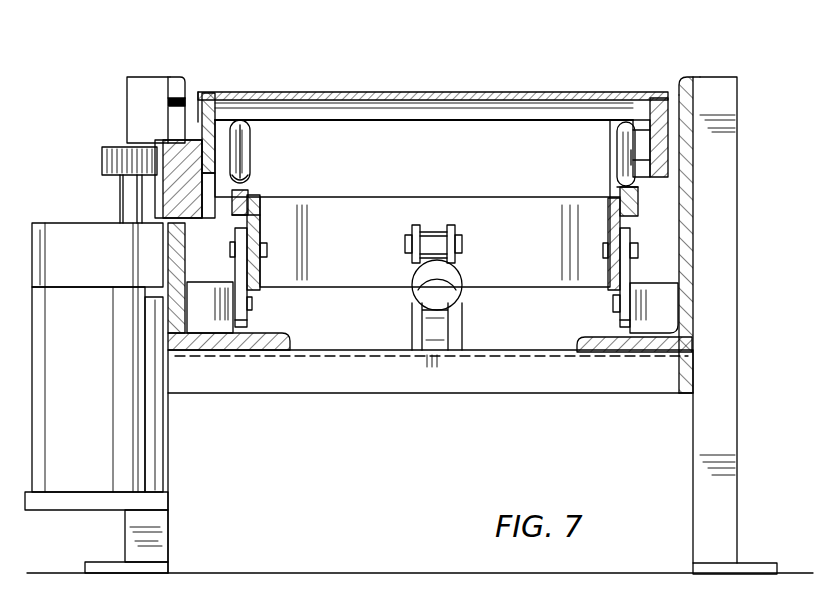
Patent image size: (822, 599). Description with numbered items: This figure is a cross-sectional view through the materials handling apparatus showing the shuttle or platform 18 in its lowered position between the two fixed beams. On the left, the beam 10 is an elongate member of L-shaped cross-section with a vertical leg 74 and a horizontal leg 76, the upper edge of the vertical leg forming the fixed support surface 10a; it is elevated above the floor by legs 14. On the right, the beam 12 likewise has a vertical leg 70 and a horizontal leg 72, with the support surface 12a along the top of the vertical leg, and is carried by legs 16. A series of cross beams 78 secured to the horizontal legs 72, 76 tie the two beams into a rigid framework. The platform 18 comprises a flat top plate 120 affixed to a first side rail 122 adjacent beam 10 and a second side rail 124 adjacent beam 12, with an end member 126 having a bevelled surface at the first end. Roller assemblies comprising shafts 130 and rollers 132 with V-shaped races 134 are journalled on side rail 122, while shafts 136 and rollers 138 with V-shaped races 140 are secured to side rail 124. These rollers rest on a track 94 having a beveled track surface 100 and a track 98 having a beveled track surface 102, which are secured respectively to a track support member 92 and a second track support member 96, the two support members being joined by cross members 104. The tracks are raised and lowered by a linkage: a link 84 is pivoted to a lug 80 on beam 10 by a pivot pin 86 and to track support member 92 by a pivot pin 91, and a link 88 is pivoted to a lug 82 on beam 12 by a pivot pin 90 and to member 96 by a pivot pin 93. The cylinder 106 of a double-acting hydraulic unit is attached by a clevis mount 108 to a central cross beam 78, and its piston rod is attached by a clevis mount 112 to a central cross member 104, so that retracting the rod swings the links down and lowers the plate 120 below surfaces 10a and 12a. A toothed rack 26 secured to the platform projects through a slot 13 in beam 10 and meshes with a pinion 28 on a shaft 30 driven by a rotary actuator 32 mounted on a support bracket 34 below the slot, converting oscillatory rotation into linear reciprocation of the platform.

The beam 10 is at (162, 91).
The fixed support surface 10a is at (173, 77).
The slot 13 is at (186, 104).
The toothed rack 26 is at (176, 153).
The pinion 28 is at (115, 155).
The shaft 30 is at (120, 198).
The rotary actuator 32 is at (99, 258).
The support bracket 34 is at (67, 500).
The legs 14 is at (160, 540).
The vertical leg 74 is at (175, 297).
The lug 80 is at (212, 322).
The horizontal leg 76 is at (272, 352).
The cross beams 78 is at (437, 393).
The horizontal leg 72 is at (643, 343).
The lug 82 is at (658, 313).
The link 88 is at (628, 273).
The pivot pin 93 is at (640, 250).
The pivot pin 90 is at (613, 303).
The second track support member 96 is at (612, 232).
The track 98 is at (625, 197).
The beveled track surface 102 is at (620, 187).
The rollers 138 is at (616, 143).
The shafts 136 is at (642, 147).
The second side rail 124 is at (656, 120).
The top plate 120 is at (450, 92).
The platform 18 is at (507, 84).
The end member 126 is at (470, 113).
The first side rail 122 is at (208, 120).
The shafts 130 is at (233, 150).
The V-shaped races 134 is at (250, 160).
The rollers 132 is at (246, 166).
The beveled track surface 100 is at (244, 186).
The track 94 is at (247, 215).
The cross members 104 is at (395, 207).
The track support member 92 is at (257, 235).
The link 84 is at (245, 277).
The pivot pin 91 is at (268, 250).
The pivot pin 86 is at (252, 305).
The clevis mount 112 is at (455, 232).
The cylinder 106 is at (450, 282).
The clevis mount 108 is at (452, 330).
The beam 12 is at (698, 213).
The fixed support surface 12a is at (682, 77).
The vertical leg 70 is at (693, 183).
The V-shaped races 140 is at (632, 162).
The legs 16 is at (718, 495).